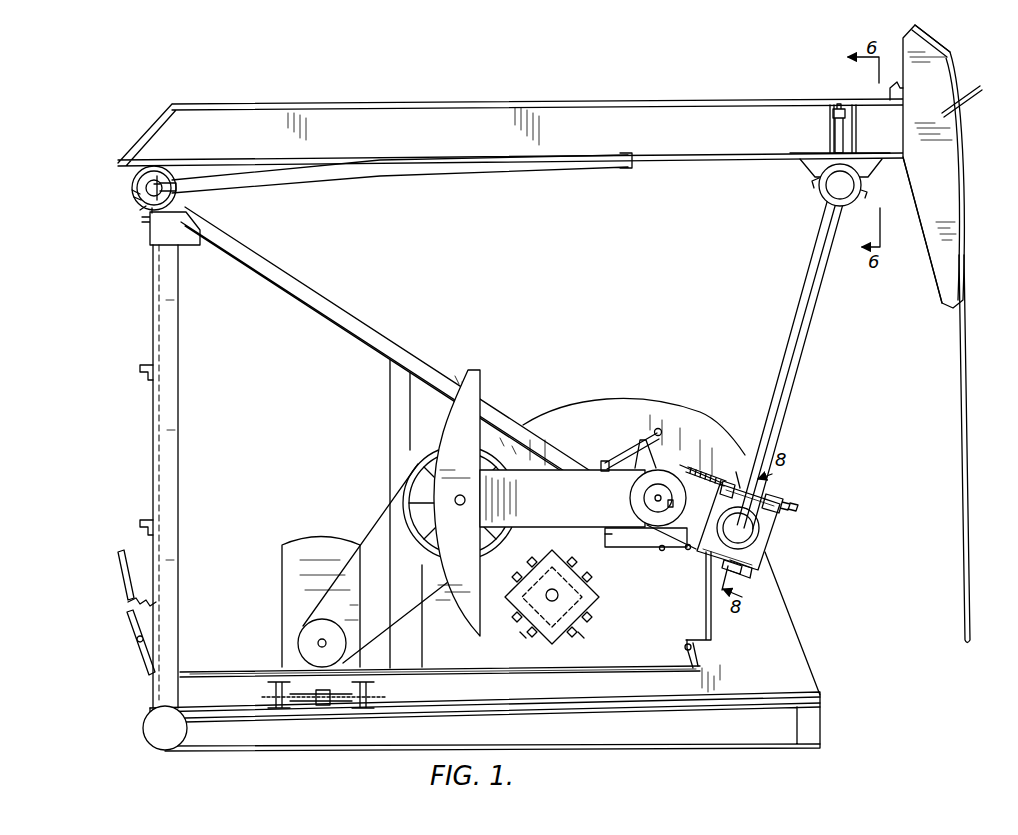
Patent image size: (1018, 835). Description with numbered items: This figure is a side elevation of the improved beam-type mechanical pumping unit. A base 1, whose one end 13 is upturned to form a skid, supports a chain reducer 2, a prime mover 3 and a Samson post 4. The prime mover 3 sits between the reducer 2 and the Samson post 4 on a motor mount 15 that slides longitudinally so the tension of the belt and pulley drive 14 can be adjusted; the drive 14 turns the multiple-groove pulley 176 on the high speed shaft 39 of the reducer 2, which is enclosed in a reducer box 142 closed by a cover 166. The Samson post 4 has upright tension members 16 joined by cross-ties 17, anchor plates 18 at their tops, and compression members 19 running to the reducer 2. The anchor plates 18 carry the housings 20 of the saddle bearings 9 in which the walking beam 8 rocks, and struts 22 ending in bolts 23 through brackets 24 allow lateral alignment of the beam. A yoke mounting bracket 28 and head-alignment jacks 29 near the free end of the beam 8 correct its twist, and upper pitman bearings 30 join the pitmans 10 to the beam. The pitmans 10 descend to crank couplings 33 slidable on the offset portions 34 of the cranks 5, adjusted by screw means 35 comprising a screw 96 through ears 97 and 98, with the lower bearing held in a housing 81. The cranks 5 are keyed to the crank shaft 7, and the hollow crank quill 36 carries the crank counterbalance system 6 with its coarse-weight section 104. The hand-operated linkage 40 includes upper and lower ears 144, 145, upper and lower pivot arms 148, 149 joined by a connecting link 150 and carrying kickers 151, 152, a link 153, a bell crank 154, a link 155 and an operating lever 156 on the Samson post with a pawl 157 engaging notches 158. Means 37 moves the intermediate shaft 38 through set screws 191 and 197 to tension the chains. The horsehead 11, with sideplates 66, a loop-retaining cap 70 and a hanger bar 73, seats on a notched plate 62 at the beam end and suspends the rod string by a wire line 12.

The base 1 is at (698, 730).
The reducer 2 is at (433, 634).
The prime mover 3 is at (300, 549).
The Samson post 4 is at (152, 312).
The cranks 5 is at (784, 525).
The crank counterbalance system 6 is at (484, 392).
The crank shaft 7 is at (651, 500).
The walking beam 8 is at (562, 112).
The saddle bearings 9 is at (143, 205).
The pitmans 10 is at (812, 324).
The horsehead 11 is at (962, 186).
The wire line 12 is at (968, 556).
The end of the base 13 is at (158, 746).
The belt and pulley drive 14 is at (376, 526).
The motor mount 15 is at (268, 696).
The tension members 16 is at (168, 406).
The cross-ties 17 is at (139, 372).
The anchor plates 18 is at (168, 232).
The compression members 19 is at (320, 302).
The housings of the saddle bearings 20 is at (132, 188).
The struts 22 is at (432, 174).
The bolt 23 is at (170, 184).
The bracket 24 is at (157, 178).
The yoke mounting bracket 28 is at (802, 170).
The head-alignment jacks 29 is at (833, 137).
The upper pitman bearings 30 is at (820, 194).
The crank couplings 33 is at (746, 580).
The offset portions 34 is at (772, 546).
The screw means 35 is at (800, 504).
The hollow crank quill 36 is at (601, 507).
The intermediate shaft adjusting means 37 is at (590, 615).
The intermediate shaft 38 is at (552, 602).
The high speed shaft 39 is at (460, 506).
The hand-operated linkage 40 is at (218, 672).
The plate 62 is at (888, 88).
The sideplates 66 is at (936, 254).
The flanged loop-retaining cap 70 is at (938, 42).
The hanger bar 73 is at (976, 92).
The housing 81 is at (766, 562).
The screw 96 is at (712, 474).
The ear 97 is at (736, 472).
The ear 98 is at (782, 500).
The coarse-weight section 104 is at (452, 428).
The reducer box 142 is at (785, 609).
The upper ear 144 is at (652, 460).
The lower ear 145 is at (689, 552).
The upper pivot arm 148 is at (614, 458).
The lower pivot arm 149 is at (645, 550).
The connecting link 150 is at (612, 536).
The upper kicker 151 is at (658, 428).
The lower kicker 152 is at (663, 552).
The link 153 is at (712, 630).
The bell crank 154 is at (700, 650).
The link 155 is at (490, 672).
The operating lever 156 is at (118, 580).
The pawl 157 is at (128, 604).
The notches 158 is at (130, 618).
The cover 166 is at (619, 416).
The multiple-groove pulley 176 is at (420, 541).
The set screws 191 is at (522, 640).
The set screws 197 is at (583, 636).